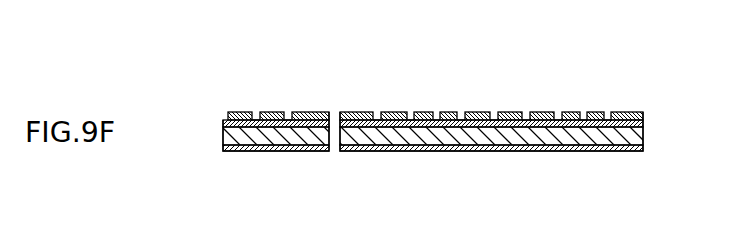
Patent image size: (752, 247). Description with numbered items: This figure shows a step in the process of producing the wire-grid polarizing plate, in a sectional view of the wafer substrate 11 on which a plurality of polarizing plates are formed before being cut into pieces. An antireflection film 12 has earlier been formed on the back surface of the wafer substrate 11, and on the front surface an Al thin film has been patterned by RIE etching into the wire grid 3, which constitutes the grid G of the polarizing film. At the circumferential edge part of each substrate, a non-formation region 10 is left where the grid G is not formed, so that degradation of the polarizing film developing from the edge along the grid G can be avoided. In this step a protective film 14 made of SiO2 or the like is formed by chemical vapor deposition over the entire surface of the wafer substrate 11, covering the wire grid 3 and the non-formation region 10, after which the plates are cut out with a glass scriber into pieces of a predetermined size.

The non-formation region 10 is at (307, 99).
The wafer substrate 11 is at (633, 132).
The antireflection film (ARC) 12 is at (630, 151).
The protective film 14 is at (420, 112).
The wire grid 3 is at (477, 112).
The grid G is at (561, 98).